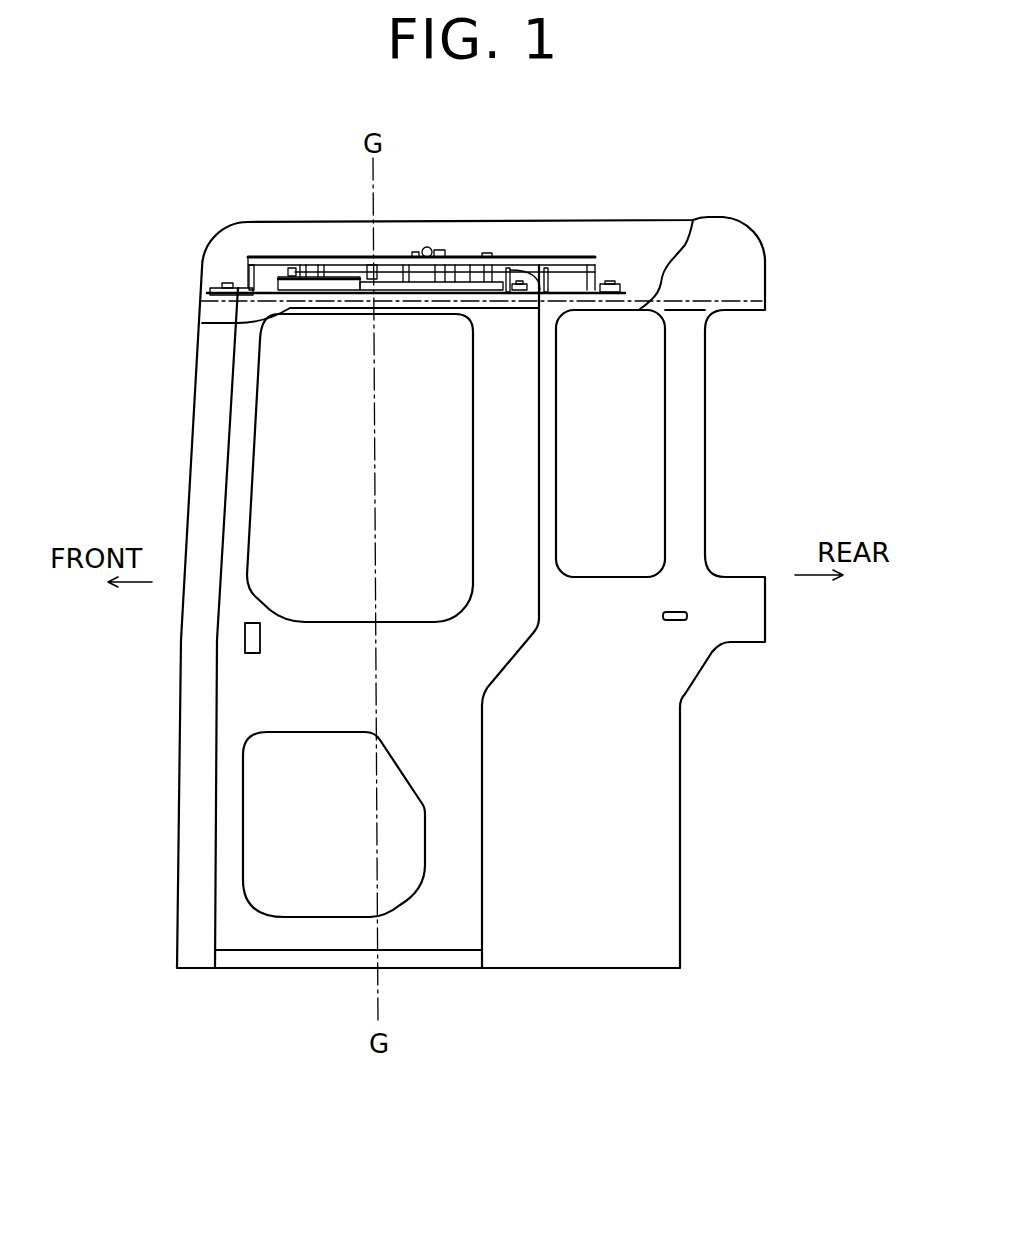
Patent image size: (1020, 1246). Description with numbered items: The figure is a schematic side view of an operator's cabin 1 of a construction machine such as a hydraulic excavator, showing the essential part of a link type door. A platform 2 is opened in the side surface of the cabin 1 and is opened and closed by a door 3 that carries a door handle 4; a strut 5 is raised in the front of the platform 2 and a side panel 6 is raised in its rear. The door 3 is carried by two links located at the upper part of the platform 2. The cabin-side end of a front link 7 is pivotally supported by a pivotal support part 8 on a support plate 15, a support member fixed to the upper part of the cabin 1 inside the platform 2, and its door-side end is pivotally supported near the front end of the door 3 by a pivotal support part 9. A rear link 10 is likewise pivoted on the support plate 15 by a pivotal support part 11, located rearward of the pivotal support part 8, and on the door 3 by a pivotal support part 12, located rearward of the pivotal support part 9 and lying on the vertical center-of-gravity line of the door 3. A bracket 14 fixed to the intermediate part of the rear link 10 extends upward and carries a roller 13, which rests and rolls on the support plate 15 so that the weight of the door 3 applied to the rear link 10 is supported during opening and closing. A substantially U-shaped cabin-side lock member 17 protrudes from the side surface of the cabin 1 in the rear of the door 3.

The operator's cabin 1 is at (714, 219).
The platform 2 is at (221, 388).
The door 3 is at (267, 698).
The door handle 4 is at (258, 640).
The strut 5 is at (207, 482).
The side panel 6 is at (562, 703).
The front link 7 is at (320, 280).
The pivotal support part 8 is at (415, 257).
The pivotal support part 9 is at (290, 258).
The rear link 10 is at (407, 284).
The pivotal support part 11 is at (487, 255).
The pivotal support part 12 is at (370, 262).
The roller 13 is at (427, 247).
The bracket 14 is at (443, 253).
The support plate 15 is at (510, 262).
The cabin-side lock member 17 is at (688, 615).